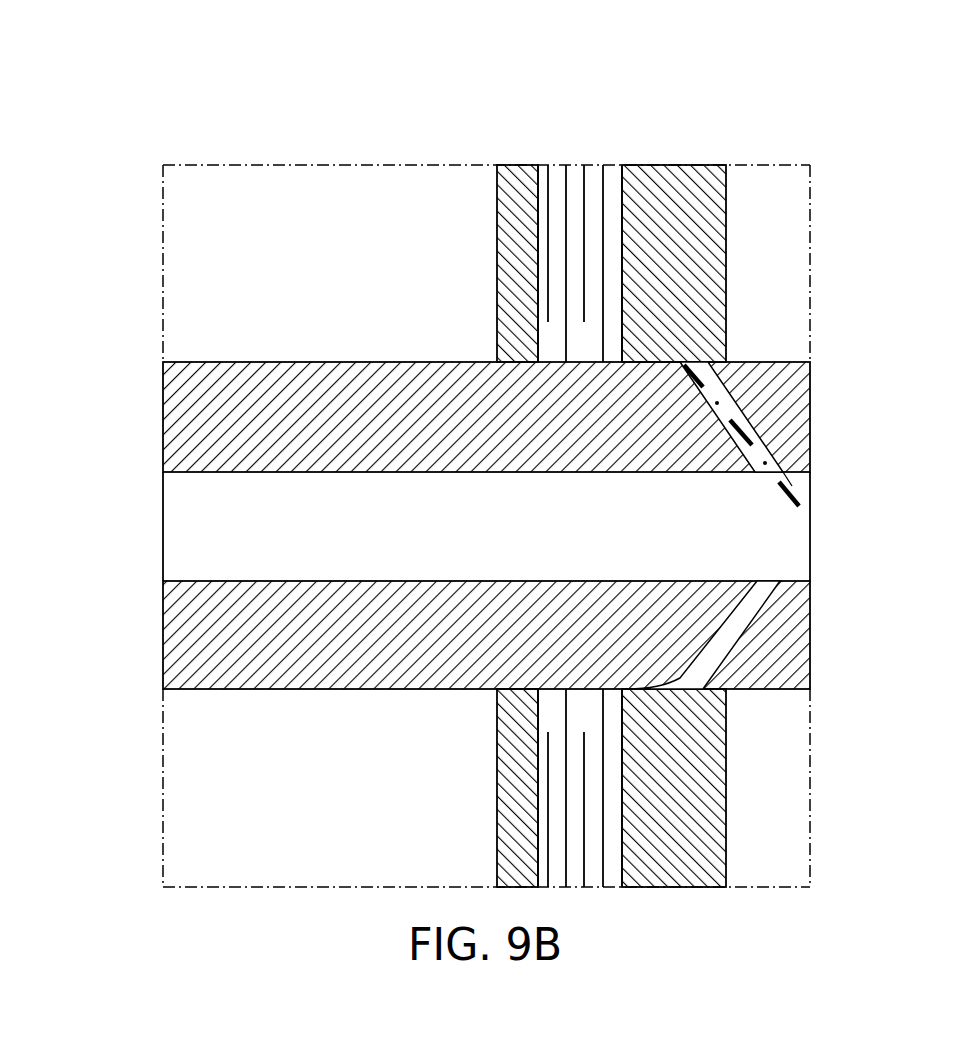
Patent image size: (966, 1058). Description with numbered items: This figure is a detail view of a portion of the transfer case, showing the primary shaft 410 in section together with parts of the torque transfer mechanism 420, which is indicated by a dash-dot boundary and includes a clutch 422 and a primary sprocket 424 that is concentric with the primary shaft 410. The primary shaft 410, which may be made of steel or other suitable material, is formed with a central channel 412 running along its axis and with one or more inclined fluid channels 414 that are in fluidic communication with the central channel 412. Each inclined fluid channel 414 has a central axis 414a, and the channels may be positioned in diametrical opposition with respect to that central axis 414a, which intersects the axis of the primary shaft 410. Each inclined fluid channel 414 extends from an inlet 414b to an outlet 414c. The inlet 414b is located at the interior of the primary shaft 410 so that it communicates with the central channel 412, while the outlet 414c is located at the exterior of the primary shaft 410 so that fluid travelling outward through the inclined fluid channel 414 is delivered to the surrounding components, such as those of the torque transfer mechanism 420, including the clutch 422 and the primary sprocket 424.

The primary shaft 410 is at (250, 360).
The central channel 412 is at (307, 472).
The inclined fluid channels 414 is at (745, 615).
The central axis 414a is at (777, 483).
The inlet 414b is at (785, 475).
The outlet 414c is at (686, 364).
The torque transfer mechanism 420 is at (445, 210).
The clutch 422 is at (570, 165).
The primary sprocket 424 is at (727, 252).